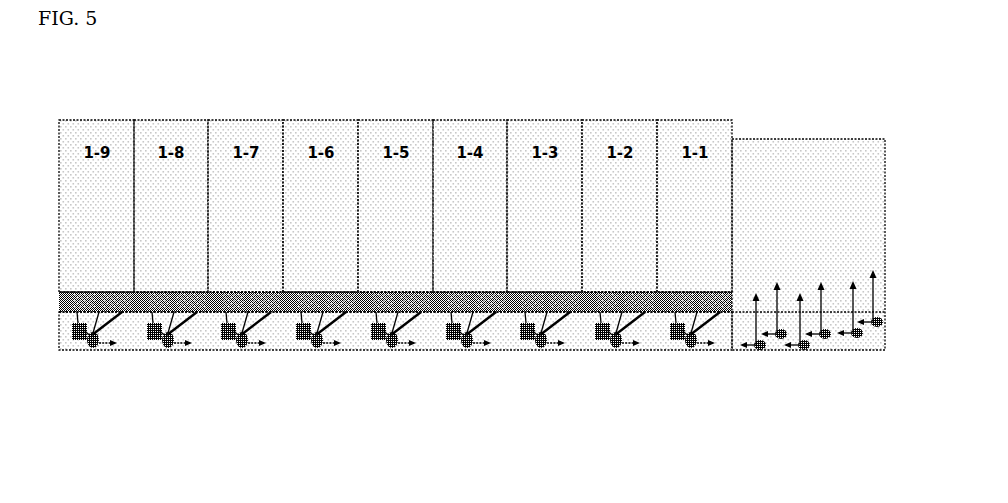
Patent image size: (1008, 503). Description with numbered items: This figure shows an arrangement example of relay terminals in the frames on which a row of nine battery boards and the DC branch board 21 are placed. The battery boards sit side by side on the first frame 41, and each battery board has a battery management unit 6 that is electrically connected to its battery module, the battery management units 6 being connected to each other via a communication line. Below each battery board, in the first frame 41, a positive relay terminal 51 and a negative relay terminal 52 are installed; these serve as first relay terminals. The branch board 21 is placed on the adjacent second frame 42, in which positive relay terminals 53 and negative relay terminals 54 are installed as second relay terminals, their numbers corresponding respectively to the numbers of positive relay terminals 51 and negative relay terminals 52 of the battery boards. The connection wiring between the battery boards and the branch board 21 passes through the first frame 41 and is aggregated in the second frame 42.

The branch board 21 is at (808, 139).
The first frame 41 is at (214, 369).
The second frame 42 is at (747, 352).
The battery management unit (BMU) 6 is at (117, 293).
The positive relay terminal 51 is at (244, 349).
The negative relay terminal 52 is at (154, 341).
The positive relay terminal 53 is at (761, 351).
The negative relay terminal 54 is at (780, 340).